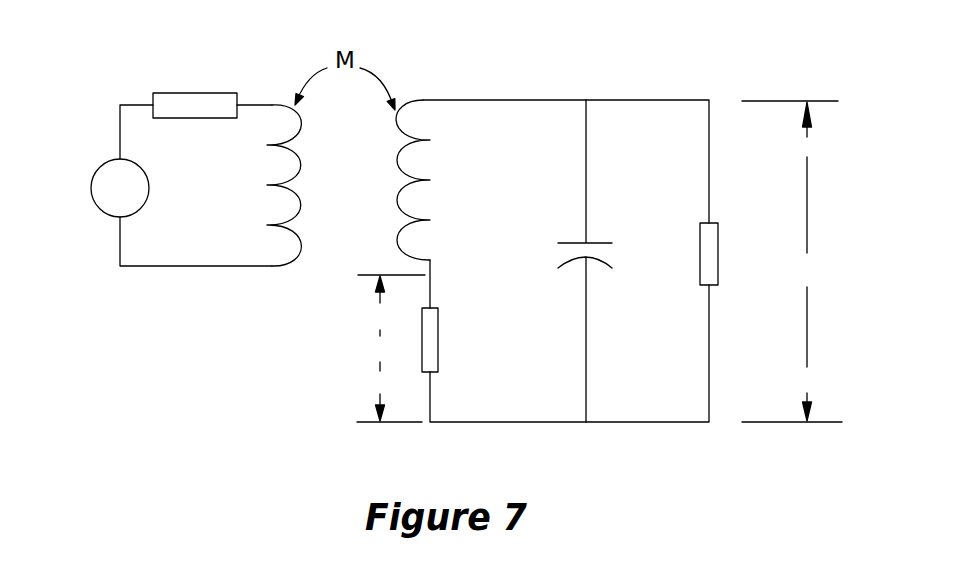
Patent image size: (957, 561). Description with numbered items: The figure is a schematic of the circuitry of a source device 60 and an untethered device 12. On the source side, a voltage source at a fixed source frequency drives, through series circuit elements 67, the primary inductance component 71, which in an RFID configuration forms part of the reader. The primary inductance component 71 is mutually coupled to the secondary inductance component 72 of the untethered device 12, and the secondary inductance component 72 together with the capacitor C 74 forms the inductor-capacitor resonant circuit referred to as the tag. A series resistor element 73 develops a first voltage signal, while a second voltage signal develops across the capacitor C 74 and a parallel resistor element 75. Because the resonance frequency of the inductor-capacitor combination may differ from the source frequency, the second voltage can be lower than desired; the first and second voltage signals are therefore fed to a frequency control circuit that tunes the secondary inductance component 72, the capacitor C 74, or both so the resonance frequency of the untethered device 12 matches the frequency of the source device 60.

The source device 60 is at (185, 197).
The circuit elements (resistor R0 and source) of primary circuit 67 is at (213, 119).
The L0 inductance component 71 is at (298, 168).
The L1 inductance component 72 is at (397, 202).
The resistor R1 73 is at (440, 322).
The capacitor C 74 is at (572, 242).
The resistor R2 75 is at (700, 262).
The untethered device 12 is at (599, 288).